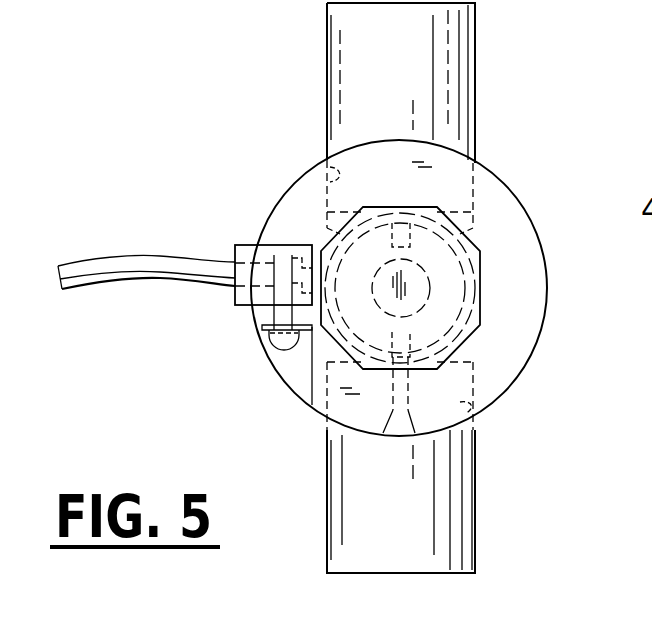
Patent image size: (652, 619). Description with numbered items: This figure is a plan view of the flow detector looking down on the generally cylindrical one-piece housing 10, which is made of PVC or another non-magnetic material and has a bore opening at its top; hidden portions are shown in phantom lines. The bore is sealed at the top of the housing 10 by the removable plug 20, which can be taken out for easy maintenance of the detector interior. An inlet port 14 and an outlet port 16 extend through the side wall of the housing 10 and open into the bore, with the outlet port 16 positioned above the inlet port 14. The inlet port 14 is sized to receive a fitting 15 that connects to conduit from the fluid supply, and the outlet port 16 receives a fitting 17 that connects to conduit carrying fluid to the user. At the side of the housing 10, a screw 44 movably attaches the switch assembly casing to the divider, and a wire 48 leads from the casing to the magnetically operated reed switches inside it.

The housing 10 is at (512, 192).
The inlet port 14 is at (470, 412).
The fitting 15 is at (476, 498).
The outlet port 16 is at (326, 162).
The fitting 17 is at (476, 82).
The removable plug 20 is at (483, 290).
The screw 44 is at (282, 346).
The wire 48 is at (118, 262).